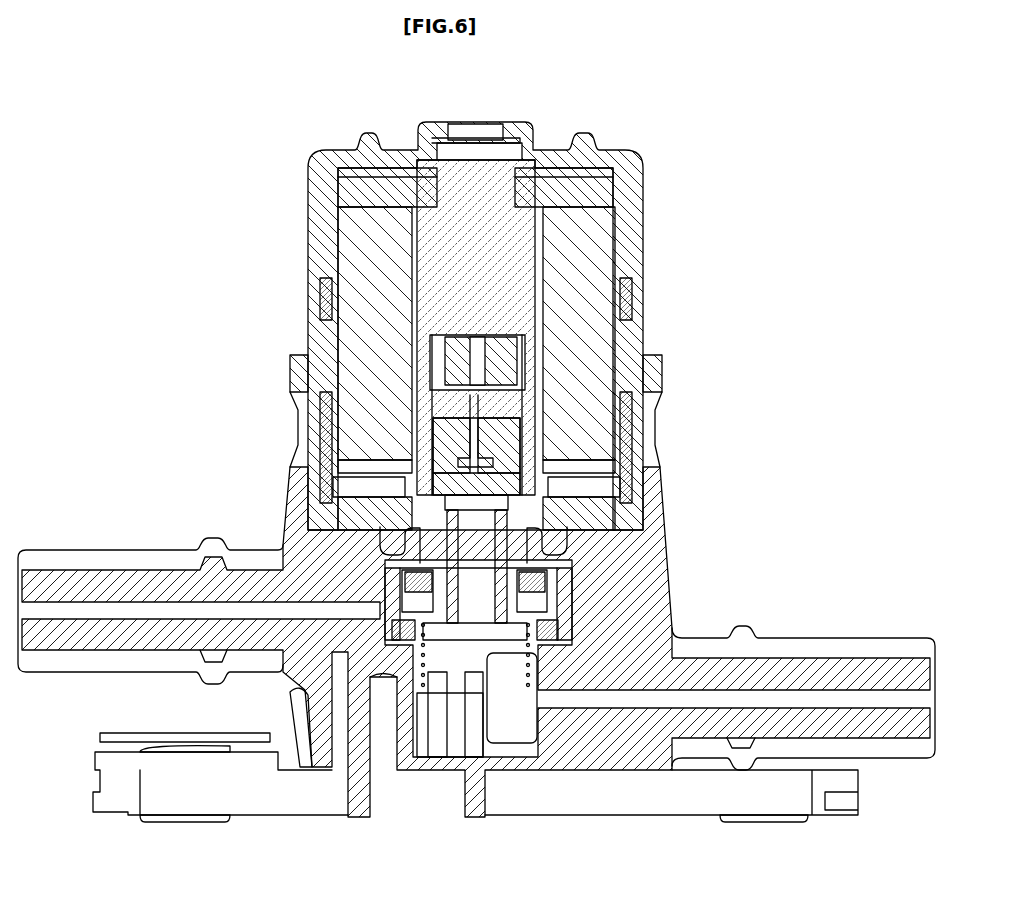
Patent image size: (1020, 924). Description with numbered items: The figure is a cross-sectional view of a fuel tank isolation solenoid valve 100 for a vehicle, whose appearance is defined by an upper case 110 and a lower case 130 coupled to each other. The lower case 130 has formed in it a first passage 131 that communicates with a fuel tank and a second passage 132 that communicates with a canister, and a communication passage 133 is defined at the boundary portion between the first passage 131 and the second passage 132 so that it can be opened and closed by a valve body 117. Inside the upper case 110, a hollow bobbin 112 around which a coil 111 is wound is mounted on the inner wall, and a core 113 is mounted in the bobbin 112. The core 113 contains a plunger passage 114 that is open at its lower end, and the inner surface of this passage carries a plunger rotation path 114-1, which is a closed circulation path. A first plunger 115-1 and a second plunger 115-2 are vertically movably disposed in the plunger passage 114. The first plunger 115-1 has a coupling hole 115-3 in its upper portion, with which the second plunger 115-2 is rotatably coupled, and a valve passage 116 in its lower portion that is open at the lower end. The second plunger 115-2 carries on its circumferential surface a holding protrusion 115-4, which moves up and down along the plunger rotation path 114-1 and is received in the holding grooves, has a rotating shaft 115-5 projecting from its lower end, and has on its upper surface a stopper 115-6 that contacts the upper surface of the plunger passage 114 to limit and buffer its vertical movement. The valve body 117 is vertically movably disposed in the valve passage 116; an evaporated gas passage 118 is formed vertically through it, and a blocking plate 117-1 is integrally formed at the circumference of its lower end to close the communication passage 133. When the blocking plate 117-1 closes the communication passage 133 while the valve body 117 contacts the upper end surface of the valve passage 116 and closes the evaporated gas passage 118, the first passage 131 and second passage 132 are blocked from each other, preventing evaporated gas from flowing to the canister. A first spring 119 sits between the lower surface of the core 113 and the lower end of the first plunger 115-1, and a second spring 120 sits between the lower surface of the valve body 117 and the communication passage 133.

The fuel tank isolation solenoid valve 100 is at (776, 123).
The upper case 110 is at (308, 228).
The coil 111 is at (365, 318).
The bobbin 112 is at (413, 270).
The core 113 is at (490, 222).
The plunger passage 114 is at (437, 358).
The plunger rotation path 114-1 is at (477, 435).
The first plunger 115-1 is at (447, 435).
The second plunger 115-2 is at (447, 408).
The coupling hole 115-3 is at (518, 478).
The holding protrusion 115-4 is at (475, 187).
The rotating shaft 115-5 is at (545, 470).
The stopper 115-6 is at (525, 378).
The valve passage 116 is at (407, 523).
The valve body 117 is at (500, 587).
The blocking plate 117-1 is at (557, 628).
The evaporated gas passage 118 is at (477, 547).
The first spring 119 is at (385, 545).
The second spring 120 is at (422, 665).
The lower case 130 is at (820, 657).
The first passage 131 is at (78, 607).
The second passage 132 is at (902, 697).
The communication passage 133 is at (457, 652).